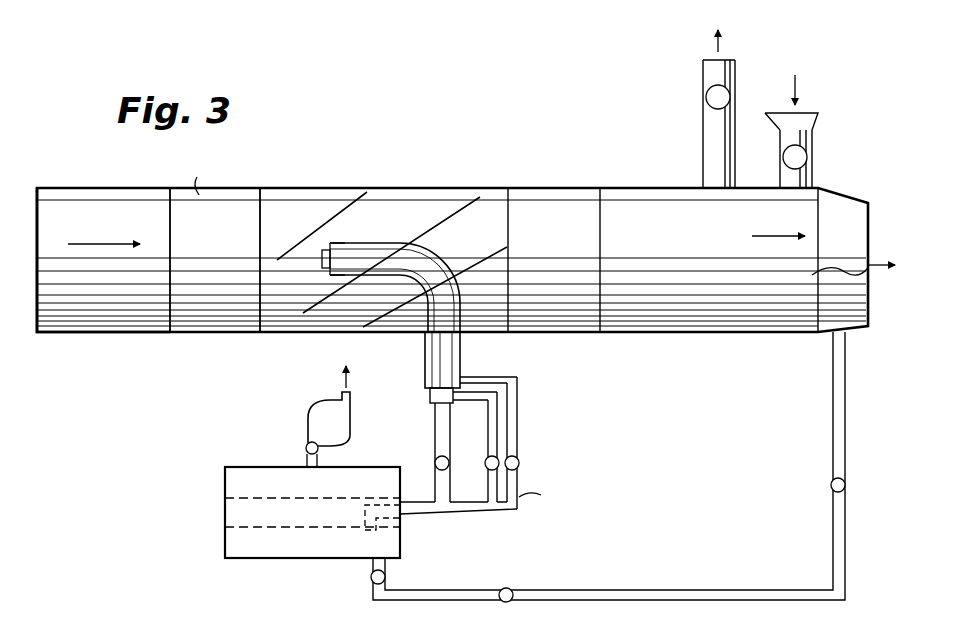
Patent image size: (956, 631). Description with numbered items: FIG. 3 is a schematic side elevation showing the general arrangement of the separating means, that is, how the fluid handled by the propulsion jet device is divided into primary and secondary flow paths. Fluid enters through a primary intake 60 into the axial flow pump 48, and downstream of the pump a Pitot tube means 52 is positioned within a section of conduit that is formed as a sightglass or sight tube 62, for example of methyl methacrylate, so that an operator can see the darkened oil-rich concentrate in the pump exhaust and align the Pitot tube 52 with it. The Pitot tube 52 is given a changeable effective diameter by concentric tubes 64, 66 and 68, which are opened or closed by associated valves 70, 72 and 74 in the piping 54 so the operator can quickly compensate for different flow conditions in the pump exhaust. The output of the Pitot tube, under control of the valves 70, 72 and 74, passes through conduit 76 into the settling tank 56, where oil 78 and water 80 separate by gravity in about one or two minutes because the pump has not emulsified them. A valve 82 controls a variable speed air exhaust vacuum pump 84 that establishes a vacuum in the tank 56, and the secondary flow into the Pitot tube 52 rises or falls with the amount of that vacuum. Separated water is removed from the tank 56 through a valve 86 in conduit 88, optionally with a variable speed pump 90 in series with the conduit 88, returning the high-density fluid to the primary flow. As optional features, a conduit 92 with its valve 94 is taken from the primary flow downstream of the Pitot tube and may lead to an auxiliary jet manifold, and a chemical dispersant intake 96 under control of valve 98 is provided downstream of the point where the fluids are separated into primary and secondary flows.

The axial flow pump 48 is at (200, 333).
The Pitot tube means 52 is at (470, 363).
The secondary fluid piping 54 is at (543, 442).
The settling tank 56 is at (225, 478).
The primary intake 60 is at (96, 333).
The sight tube 62 is at (418, 188).
The concentric tube 64 is at (392, 244).
The concentric tube 66 is at (330, 248).
The concentric tube 68 is at (320, 262).
The valve 70 is at (519, 462).
The valve 72 is at (499, 458).
The valve 74 is at (436, 460).
The conduit 76 is at (461, 512).
The oil 78 is at (225, 512).
The water 80 is at (225, 541).
The valve 82 is at (306, 447).
The variable speed air exhaust vacuum pump 84 is at (343, 418).
The valve 86 is at (503, 588).
The conduit 88 is at (581, 590).
The variable speed pump 90 is at (831, 487).
The conduit 92 is at (710, 150).
The exhaust valve 94 is at (706, 97).
The chemical dispersant intake 96 is at (812, 120).
The valve 98 is at (808, 156).